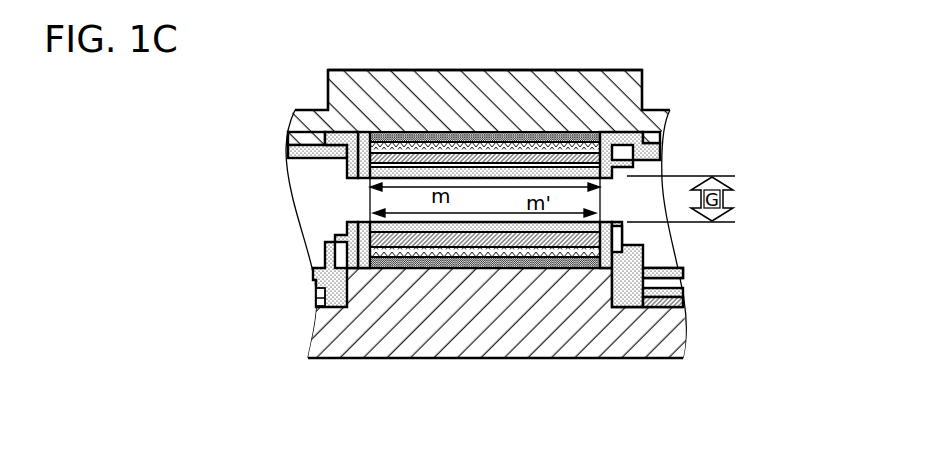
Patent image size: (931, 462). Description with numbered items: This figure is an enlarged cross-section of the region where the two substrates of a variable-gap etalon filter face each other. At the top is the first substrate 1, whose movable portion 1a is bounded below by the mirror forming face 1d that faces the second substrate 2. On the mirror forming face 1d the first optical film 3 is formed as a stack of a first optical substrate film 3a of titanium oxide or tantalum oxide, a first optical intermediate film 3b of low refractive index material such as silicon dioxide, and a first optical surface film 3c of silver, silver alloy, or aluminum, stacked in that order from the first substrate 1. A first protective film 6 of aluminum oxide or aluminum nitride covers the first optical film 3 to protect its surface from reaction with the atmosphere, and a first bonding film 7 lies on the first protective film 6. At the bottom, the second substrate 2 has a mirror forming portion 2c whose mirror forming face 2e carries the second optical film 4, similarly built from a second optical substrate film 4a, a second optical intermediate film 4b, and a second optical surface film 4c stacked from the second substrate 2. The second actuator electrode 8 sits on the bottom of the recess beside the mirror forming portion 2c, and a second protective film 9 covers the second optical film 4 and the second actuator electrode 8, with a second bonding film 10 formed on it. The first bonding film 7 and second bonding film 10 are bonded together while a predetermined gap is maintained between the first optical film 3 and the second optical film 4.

The first substrate 1 is at (650, 112).
The movable portion 1a is at (527, 76).
The mirror forming face 1d is at (352, 142).
The second substrate 2 is at (380, 346).
The mirror forming portion 2c is at (642, 276).
The mirror forming face 2e is at (618, 262).
The first optical film 3 is at (575, 133).
The first optical substrate film 3a is at (646, 130).
The first optical intermediate film 3b is at (621, 145).
The first optical surface film 3c is at (618, 160).
The second optical film 4 is at (395, 233).
The second optical substrate film 4a is at (388, 262).
The second optical intermediate film 4b is at (396, 251).
The second optical surface film 4c is at (400, 238).
The first protective film 6 is at (292, 138).
The first bonding film 7 is at (295, 151).
The second actuator electrode 8 is at (676, 302).
The second protective film 9 is at (333, 306).
The second bonding film 10 is at (312, 279).